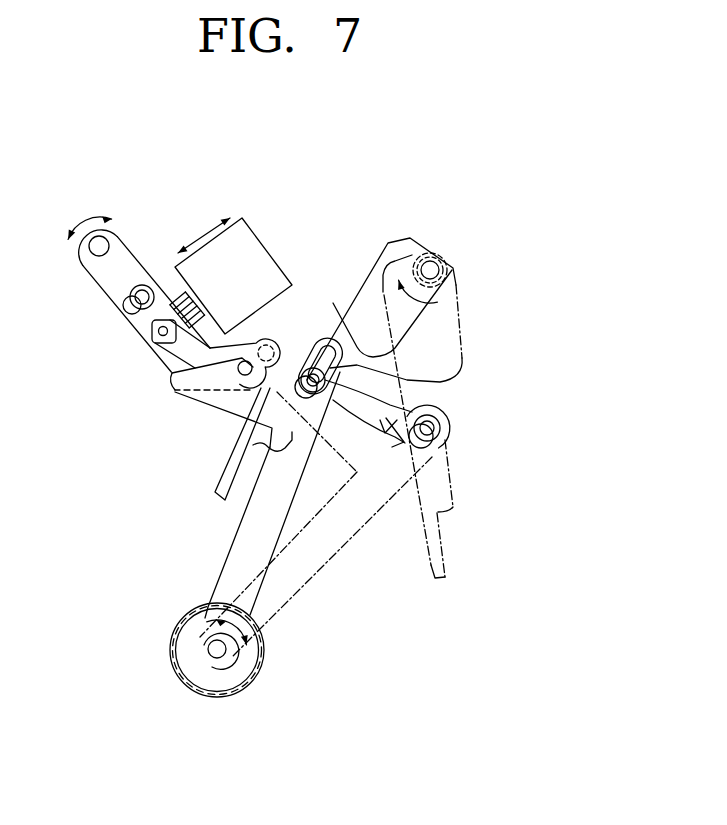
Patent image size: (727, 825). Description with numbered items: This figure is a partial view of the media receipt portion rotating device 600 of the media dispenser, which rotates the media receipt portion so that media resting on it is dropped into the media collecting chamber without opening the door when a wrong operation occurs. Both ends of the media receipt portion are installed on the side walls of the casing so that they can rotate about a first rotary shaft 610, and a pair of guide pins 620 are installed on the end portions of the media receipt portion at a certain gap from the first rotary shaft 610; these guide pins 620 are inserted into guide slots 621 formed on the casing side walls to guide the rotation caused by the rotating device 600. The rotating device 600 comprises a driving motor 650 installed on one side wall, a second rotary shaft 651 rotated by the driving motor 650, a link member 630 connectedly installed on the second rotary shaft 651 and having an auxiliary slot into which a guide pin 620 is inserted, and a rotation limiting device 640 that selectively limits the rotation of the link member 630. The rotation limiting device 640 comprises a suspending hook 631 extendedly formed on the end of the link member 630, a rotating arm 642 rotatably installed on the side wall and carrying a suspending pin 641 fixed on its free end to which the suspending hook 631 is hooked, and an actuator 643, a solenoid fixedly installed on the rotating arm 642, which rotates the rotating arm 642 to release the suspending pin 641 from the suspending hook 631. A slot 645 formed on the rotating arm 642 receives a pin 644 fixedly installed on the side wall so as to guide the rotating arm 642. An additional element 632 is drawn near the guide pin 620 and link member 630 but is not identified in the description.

The media receipt portion rotating device 600 is at (492, 488).
The first rotary shaft 610 is at (418, 262).
The guide pins 620 is at (440, 377).
The guide slots 621 is at (440, 418).
The link member 630 is at (245, 538).
The suspending hook 631 is at (245, 362).
The slot pin 632 is at (325, 342).
The rotation limiting device 640 is at (122, 232).
The suspending pin 641 is at (226, 402).
The rotating arm 642 is at (155, 345).
The actuator 643 is at (250, 247).
The pin 644 is at (122, 303).
The slot 645 is at (142, 297).
The driving motor 650 is at (258, 663).
The second rotary shaft 651 is at (208, 650).